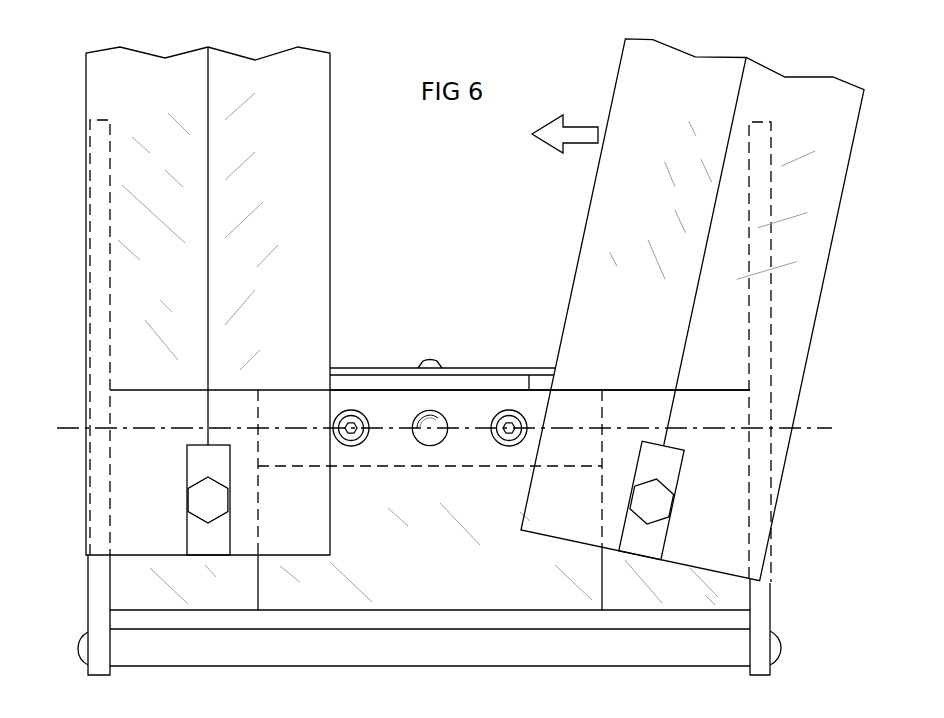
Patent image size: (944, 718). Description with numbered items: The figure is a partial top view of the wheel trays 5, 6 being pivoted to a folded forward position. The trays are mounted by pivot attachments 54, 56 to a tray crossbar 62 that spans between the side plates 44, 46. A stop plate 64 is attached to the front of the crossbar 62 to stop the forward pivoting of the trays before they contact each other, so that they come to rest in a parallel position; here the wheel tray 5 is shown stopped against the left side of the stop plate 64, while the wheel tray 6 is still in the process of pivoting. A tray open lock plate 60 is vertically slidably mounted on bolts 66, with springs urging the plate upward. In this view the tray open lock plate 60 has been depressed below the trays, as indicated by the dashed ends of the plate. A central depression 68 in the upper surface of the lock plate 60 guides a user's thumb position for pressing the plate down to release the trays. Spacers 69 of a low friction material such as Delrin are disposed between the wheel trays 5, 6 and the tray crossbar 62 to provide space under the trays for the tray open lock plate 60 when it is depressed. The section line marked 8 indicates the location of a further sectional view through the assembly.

The wheel tray 5 is at (331, 236).
The wheel tray 6 is at (693, 306).
The section line of FIG. 8 is at (57, 428).
The side plate 44 is at (96, 606).
The side plate 46 is at (766, 606).
The pivot attachment 54 is at (190, 502).
The pivot attachment 56 is at (666, 505).
The tray open lock plate 60 is at (387, 400).
The tray crossbar 62 is at (424, 560).
The stop plate 64 is at (479, 380).
The bolts 66 is at (352, 446).
The central depression 68 is at (431, 446).
The spacers 69 is at (258, 492).